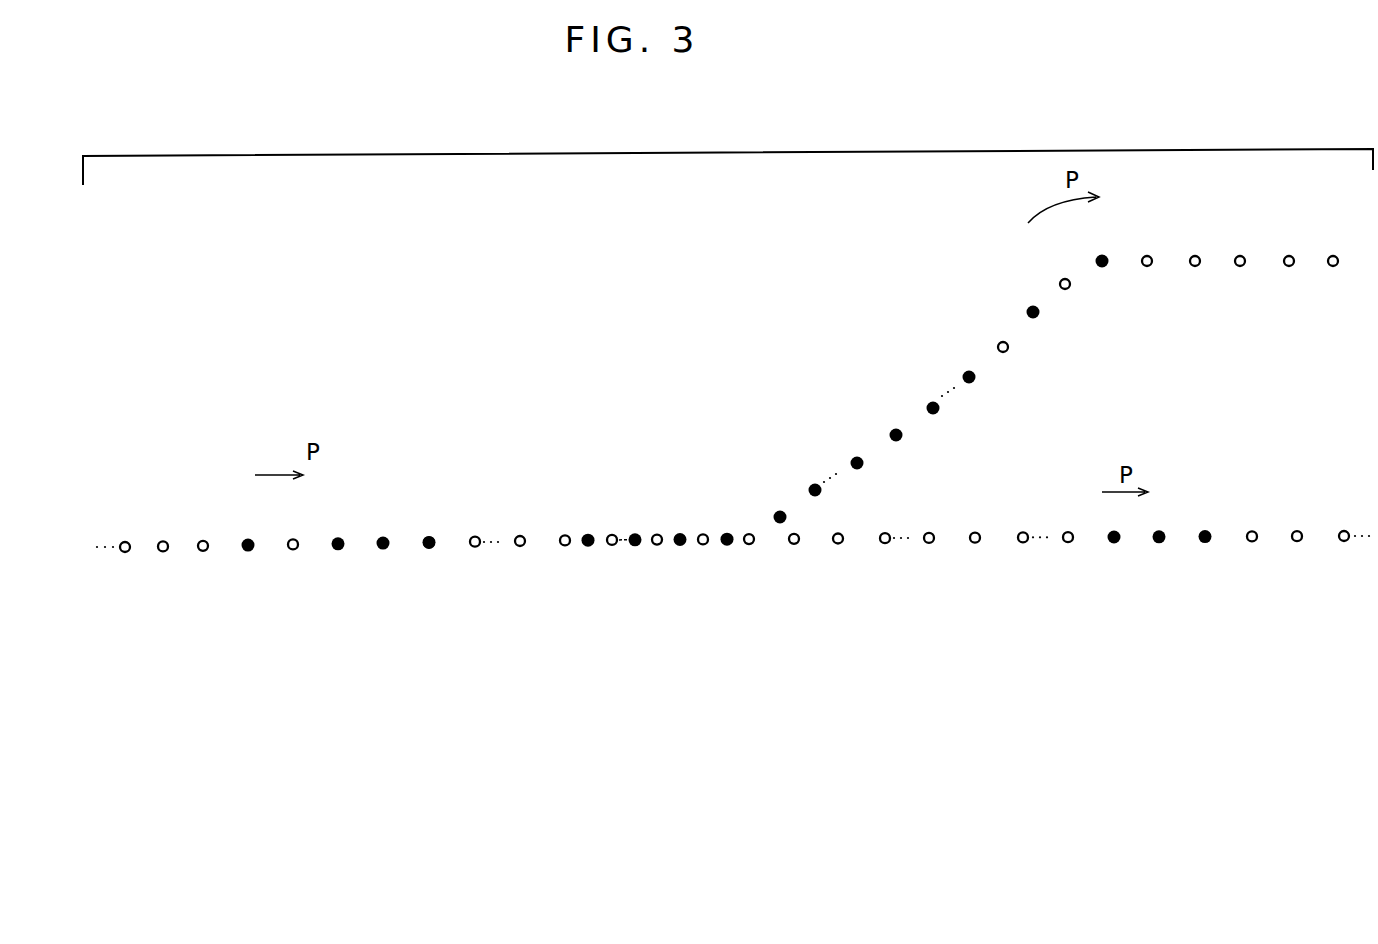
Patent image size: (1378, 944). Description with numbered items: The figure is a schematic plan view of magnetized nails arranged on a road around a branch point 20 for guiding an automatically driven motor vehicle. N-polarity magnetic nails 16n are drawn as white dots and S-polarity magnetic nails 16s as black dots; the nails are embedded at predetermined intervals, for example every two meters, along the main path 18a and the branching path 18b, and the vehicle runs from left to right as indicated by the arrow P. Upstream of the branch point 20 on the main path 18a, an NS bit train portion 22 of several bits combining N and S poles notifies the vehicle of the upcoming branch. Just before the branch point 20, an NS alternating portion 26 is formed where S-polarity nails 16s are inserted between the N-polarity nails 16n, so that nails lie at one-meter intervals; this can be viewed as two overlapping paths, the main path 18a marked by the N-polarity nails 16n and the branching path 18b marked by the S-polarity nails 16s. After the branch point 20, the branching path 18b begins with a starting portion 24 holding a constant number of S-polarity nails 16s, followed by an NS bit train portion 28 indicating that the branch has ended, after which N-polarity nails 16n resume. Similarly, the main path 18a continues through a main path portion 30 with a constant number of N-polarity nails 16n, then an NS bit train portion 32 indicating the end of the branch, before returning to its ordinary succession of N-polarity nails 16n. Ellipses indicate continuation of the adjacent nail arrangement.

The N-polarity magnetic nail 16n is at (163, 552).
The S-polarity magnetic nail 16s is at (252, 540).
The main path 18a is at (492, 585).
The branching path 18b is at (925, 343).
The branch point 20 is at (736, 498).
The NS bit train portion 22 is at (239, 555).
The starting portion 24 is at (894, 423).
The NS alternating portion 26 is at (582, 552).
The NS bit train portion 28 is at (1082, 246).
The main path portion 30 is at (758, 552).
The NS bit train portion 32 is at (1257, 546).